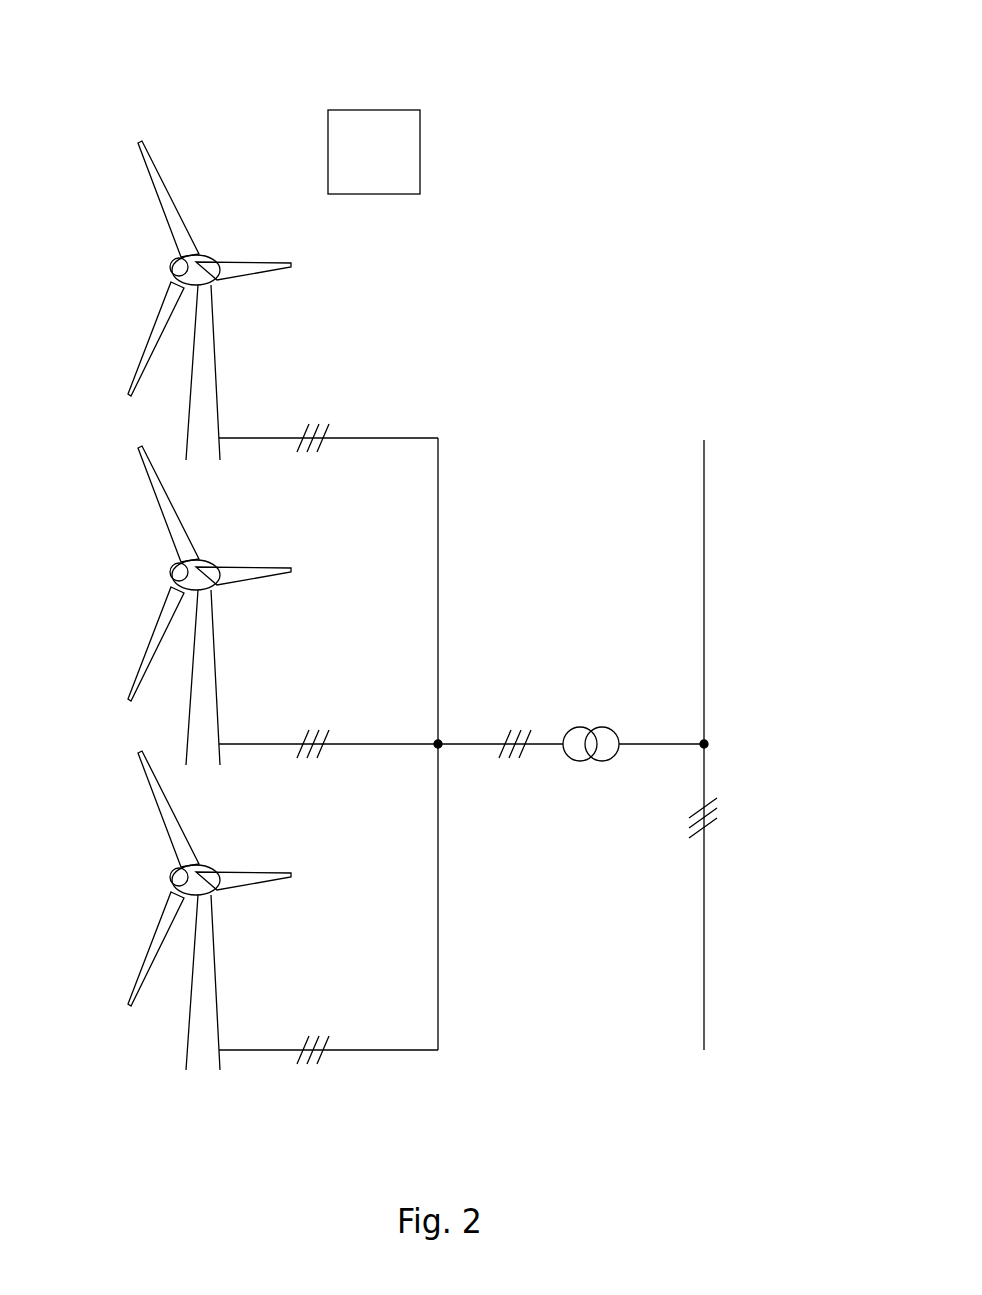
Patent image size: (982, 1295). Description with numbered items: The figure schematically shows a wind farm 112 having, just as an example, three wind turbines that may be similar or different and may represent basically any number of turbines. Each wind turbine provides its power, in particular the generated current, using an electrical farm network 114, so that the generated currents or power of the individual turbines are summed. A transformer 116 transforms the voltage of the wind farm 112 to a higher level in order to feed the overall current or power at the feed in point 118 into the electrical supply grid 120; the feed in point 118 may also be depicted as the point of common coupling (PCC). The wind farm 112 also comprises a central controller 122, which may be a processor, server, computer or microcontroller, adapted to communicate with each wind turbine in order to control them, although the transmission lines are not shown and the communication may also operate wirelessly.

The wind farm 112 is at (517, 262).
The electrical farm network 114 is at (460, 744).
The transformer 116 is at (594, 714).
The feed in point 118 is at (718, 720).
The electrical supply grid 120 is at (705, 472).
The central controller 122 is at (390, 118).